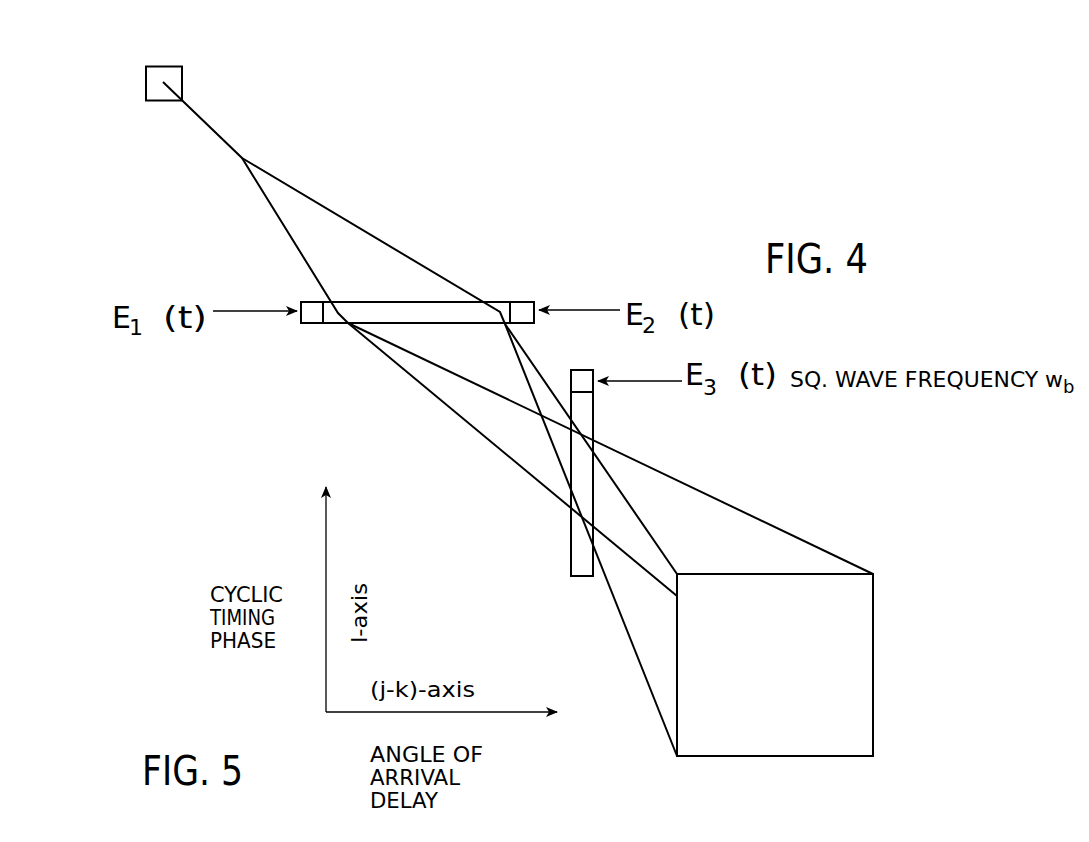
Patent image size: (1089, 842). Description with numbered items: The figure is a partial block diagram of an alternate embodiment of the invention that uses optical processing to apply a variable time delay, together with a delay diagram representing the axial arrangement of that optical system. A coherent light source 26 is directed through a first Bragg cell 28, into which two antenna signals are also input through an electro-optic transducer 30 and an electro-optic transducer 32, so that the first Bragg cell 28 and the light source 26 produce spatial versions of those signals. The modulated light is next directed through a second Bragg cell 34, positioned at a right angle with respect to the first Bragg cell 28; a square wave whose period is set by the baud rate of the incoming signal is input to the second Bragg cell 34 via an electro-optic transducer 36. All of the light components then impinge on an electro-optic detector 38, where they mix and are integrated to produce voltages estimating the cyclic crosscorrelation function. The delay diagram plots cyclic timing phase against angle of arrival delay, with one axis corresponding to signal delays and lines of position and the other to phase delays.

The coherent light source 26 is at (183, 77).
The first Bragg cell 28 is at (492, 302).
The electro-optic transducer 30 is at (310, 312).
The electro-optic transducer 32 is at (527, 302).
The second Bragg cell 34 is at (568, 556).
The electro-optic transducer 36 is at (588, 373).
The electro-optic detector 38 is at (865, 672).